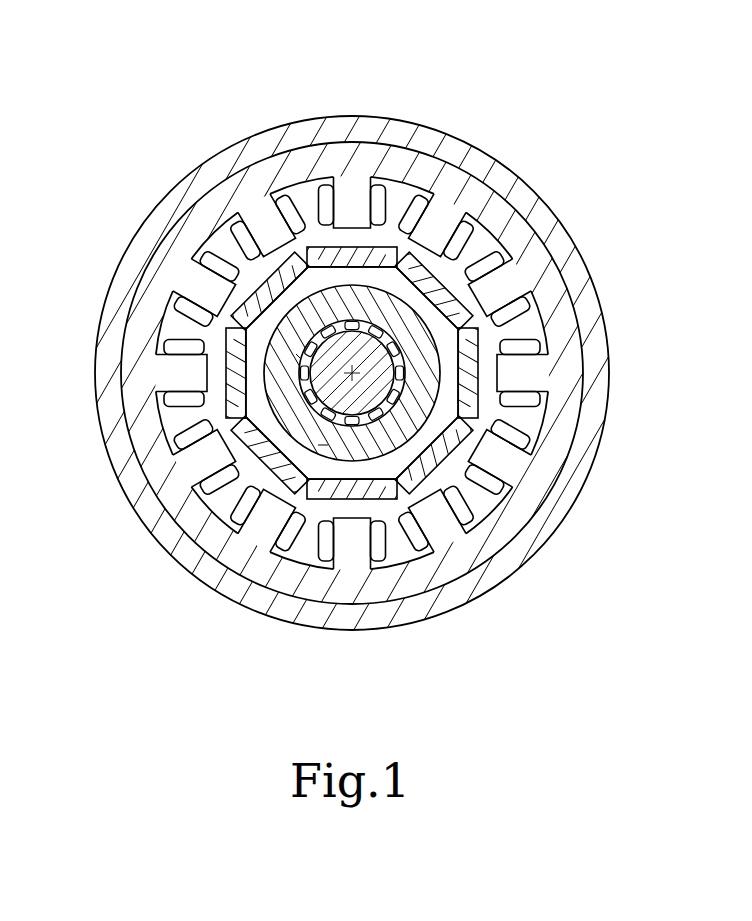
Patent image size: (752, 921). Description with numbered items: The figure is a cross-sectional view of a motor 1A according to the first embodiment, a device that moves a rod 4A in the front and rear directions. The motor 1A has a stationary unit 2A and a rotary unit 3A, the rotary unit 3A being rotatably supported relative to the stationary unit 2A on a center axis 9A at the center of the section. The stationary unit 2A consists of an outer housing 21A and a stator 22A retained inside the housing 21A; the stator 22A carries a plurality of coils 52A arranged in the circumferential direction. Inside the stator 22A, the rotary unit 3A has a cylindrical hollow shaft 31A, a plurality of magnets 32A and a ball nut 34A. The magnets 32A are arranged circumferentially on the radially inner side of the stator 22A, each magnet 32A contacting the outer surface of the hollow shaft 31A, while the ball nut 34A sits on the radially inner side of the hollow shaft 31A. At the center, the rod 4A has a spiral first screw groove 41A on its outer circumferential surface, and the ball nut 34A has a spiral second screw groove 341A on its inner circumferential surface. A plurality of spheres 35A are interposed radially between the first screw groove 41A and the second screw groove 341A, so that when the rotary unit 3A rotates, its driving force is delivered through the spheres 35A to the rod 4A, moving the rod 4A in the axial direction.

The motor 1A is at (254, 83).
The stationary unit 2A is at (537, 592).
The housing 21A is at (202, 182).
The stator 22A is at (400, 190).
The coils 52A is at (493, 263).
The rotary unit 3A is at (452, 479).
The hollow shaft 31A is at (346, 268).
The magnets 32A is at (465, 287).
The ball nut 34A is at (312, 410).
The second screw groove 341A is at (323, 445).
The spheres 35A is at (248, 414).
The rod 4A is at (313, 365).
The first screw groove 41A is at (298, 356).
The center axis 9A is at (310, 338).